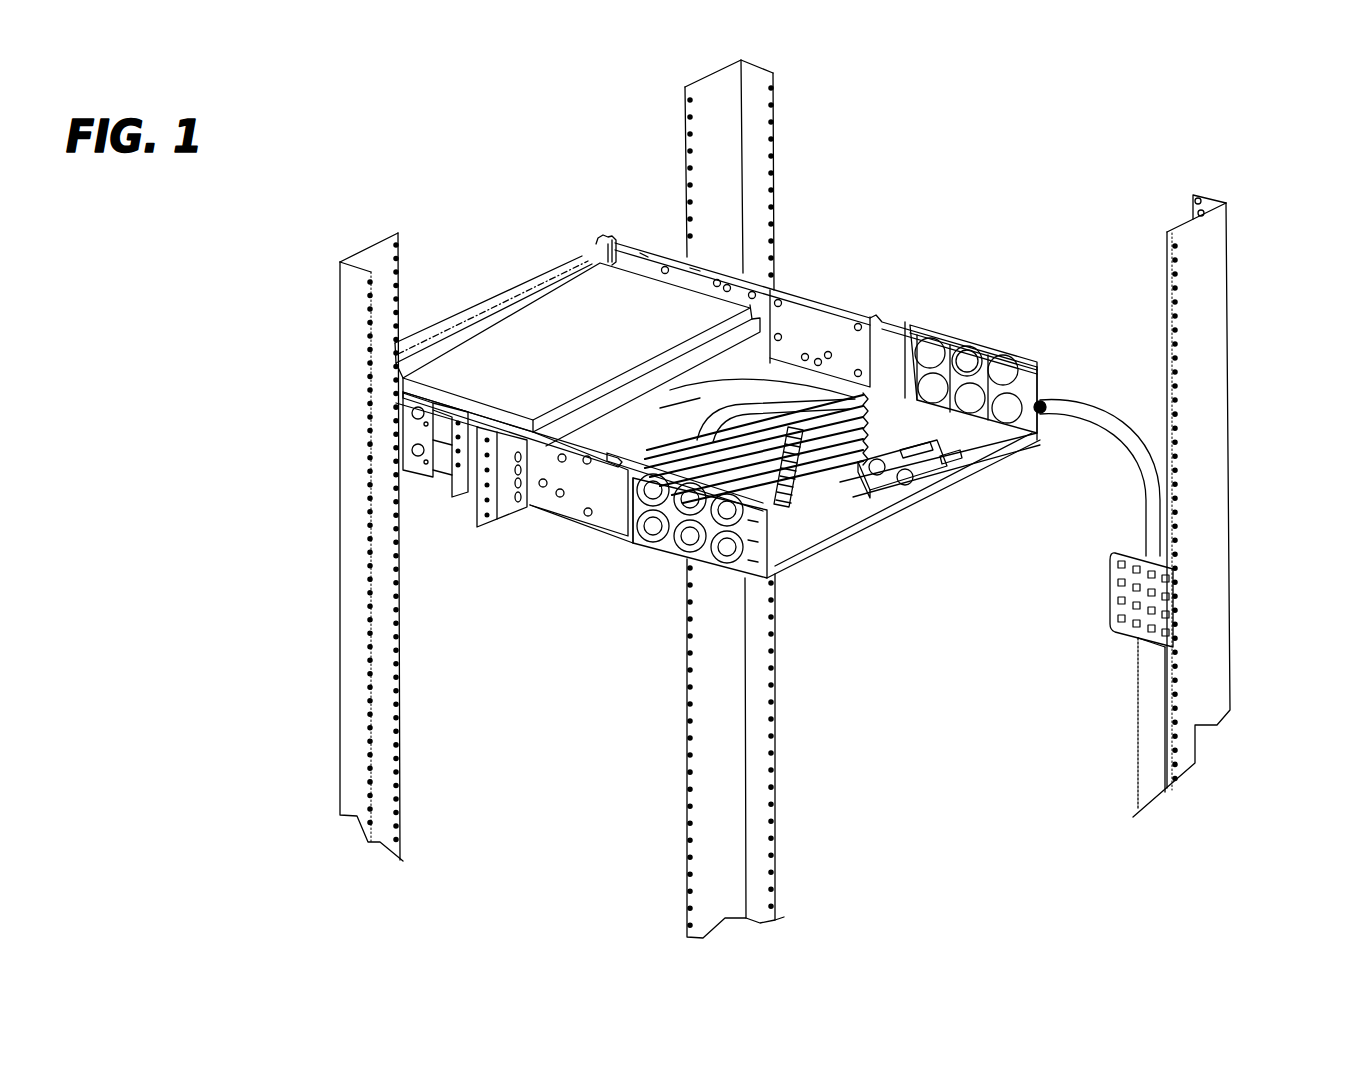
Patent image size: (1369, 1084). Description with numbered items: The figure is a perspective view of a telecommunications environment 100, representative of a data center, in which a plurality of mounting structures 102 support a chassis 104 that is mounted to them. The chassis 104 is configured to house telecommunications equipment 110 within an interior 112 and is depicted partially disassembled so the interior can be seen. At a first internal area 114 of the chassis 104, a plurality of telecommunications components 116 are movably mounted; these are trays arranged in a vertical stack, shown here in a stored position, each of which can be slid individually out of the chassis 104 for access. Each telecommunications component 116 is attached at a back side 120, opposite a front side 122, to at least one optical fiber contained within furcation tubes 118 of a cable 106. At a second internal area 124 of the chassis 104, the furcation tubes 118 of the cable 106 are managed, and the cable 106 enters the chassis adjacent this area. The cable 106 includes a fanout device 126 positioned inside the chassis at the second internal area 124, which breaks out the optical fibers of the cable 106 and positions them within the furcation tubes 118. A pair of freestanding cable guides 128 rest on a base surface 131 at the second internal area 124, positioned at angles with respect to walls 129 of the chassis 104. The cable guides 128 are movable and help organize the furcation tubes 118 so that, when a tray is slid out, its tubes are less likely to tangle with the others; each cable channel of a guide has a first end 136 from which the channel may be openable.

The telecommunications environment 100 is at (1188, 136).
The mounting structures 102 is at (750, 130).
The chassis 104 is at (794, 316).
The cable 106 is at (1150, 737).
The telecommunications equipment 110 is at (649, 305).
The interior 112 is at (611, 507).
The first internal area 114 is at (698, 276).
The telecommunications components 116 is at (535, 338).
The furcation tubes 118 is at (779, 389).
The back side 120 is at (593, 413).
The front side 122 is at (483, 338).
The second internal area 124 is at (937, 408).
The fanout device 126 is at (927, 467).
The cable guides 128 is at (713, 440).
The walls 129 is at (892, 352).
The base surface 131 is at (967, 377).
The first end 136 is at (850, 470).